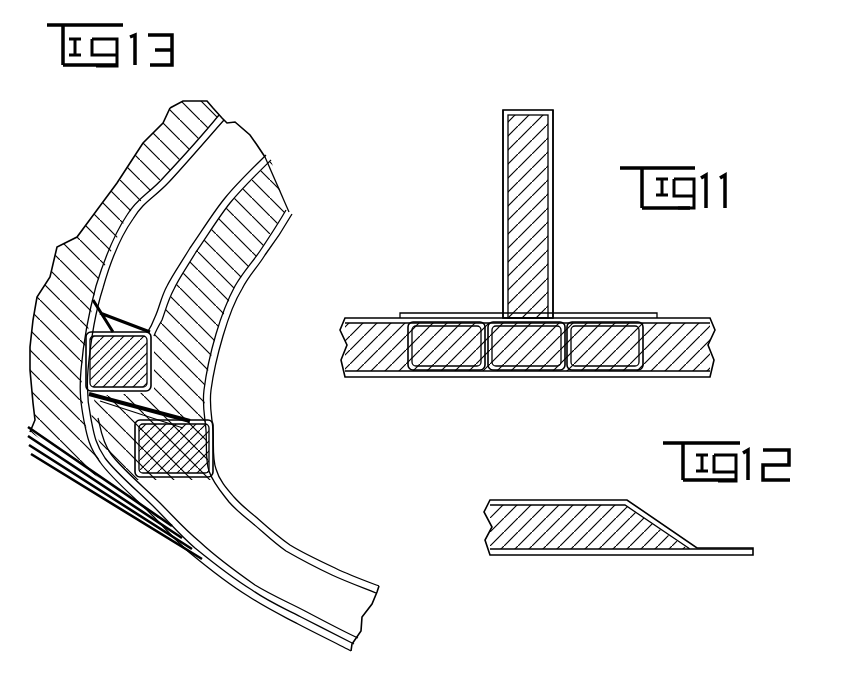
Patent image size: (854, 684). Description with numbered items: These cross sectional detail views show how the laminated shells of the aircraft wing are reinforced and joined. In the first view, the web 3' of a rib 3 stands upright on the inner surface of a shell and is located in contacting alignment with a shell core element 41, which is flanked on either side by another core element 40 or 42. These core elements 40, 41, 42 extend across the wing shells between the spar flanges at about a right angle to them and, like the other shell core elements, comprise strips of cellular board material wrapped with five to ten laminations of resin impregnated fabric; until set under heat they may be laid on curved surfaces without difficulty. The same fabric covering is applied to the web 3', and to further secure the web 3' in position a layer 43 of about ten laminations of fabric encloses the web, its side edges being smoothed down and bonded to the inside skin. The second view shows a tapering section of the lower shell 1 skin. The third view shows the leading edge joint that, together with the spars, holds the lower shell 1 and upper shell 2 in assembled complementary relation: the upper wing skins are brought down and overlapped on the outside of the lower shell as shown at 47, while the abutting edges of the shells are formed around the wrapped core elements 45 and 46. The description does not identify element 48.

In FIG. 13, the lower shell 1 is at (285, 549).
In FIG. 12, the lower shell 1 is at (508, 556).
In FIG. 13, the upper shell 2 is at (243, 143).
In FIG. 11, the rib 3 is at (545, 201).
In FIG. 11, the web 3' is at (509, 214).
In FIG. 11, the core element 40 is at (428, 384).
In FIG. 11, the shell core element 41 is at (516, 384).
In FIG. 11, the core element 42 is at (596, 384).
In FIG. 11, the layer 43 is at (553, 265).
In FIG. 13, the wrapped core element 45 is at (122, 332).
In FIG. 13, the wrapped core element 46 is at (173, 479).
In FIG. 13, the overlapped upper wing skins 47 is at (86, 483).
In FIG. 13, the inner panel layer 48 is at (240, 280).